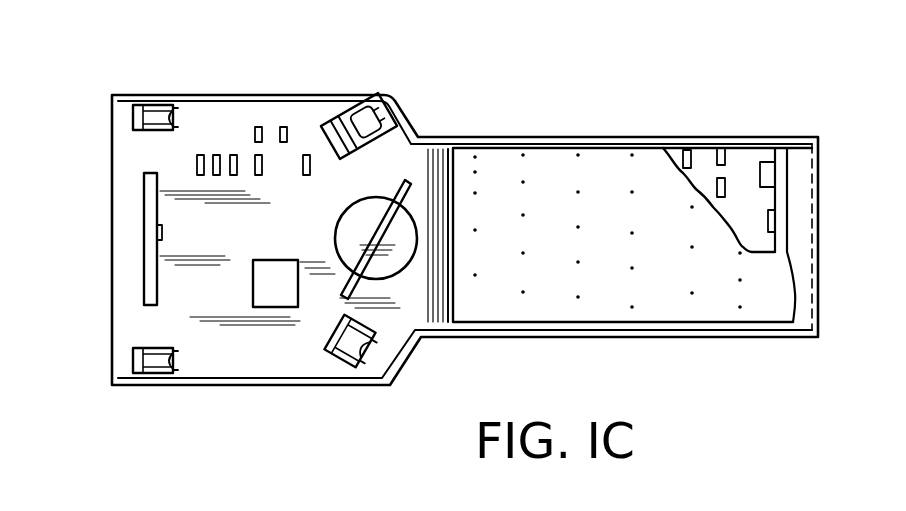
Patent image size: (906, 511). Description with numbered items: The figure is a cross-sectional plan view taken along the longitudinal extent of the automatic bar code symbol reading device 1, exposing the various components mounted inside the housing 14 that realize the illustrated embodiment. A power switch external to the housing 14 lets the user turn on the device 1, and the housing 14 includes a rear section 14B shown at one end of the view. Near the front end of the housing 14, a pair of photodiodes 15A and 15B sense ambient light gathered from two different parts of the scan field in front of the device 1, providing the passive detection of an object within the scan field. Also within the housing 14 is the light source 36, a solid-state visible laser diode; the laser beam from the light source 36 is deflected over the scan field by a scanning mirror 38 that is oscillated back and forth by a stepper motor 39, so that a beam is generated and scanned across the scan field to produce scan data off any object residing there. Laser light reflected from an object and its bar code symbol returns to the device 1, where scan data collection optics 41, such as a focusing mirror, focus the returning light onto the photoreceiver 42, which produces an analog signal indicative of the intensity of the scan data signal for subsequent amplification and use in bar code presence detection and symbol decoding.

The automatic bar code symbol reading device 1 is at (432, 250).
The housing 14 is at (412, 350).
The housing rear section 14B is at (718, 137).
The photodiode 15A is at (172, 102).
The photodiode 15B is at (177, 373).
The light source 36 is at (372, 102).
The scanning mirror 38 is at (340, 290).
The stepper motor 39 is at (377, 200).
The scan data collection optics 41 is at (150, 240).
The photoreceiver 42 is at (372, 340).